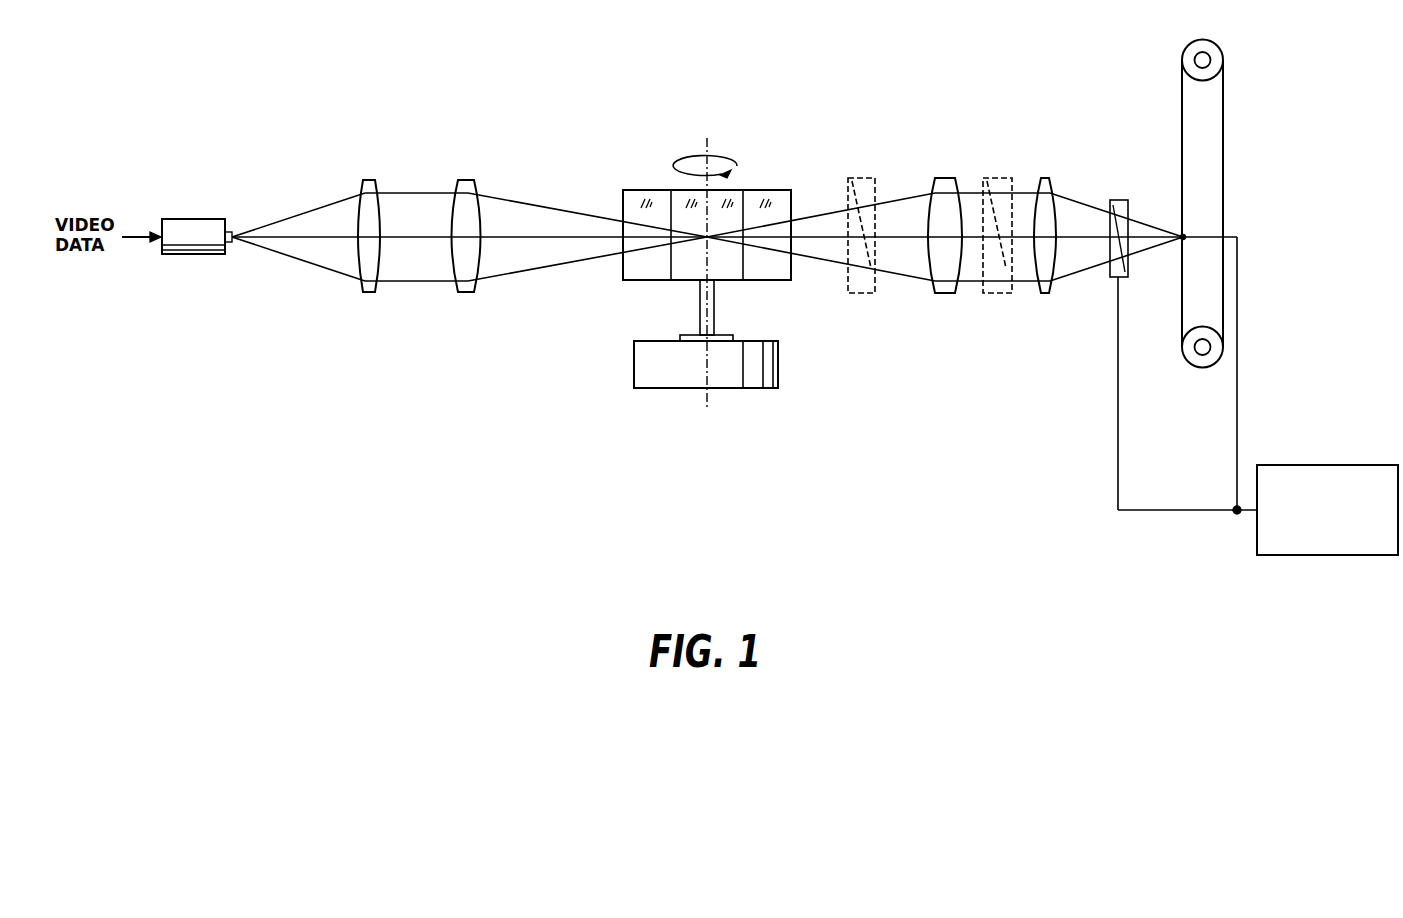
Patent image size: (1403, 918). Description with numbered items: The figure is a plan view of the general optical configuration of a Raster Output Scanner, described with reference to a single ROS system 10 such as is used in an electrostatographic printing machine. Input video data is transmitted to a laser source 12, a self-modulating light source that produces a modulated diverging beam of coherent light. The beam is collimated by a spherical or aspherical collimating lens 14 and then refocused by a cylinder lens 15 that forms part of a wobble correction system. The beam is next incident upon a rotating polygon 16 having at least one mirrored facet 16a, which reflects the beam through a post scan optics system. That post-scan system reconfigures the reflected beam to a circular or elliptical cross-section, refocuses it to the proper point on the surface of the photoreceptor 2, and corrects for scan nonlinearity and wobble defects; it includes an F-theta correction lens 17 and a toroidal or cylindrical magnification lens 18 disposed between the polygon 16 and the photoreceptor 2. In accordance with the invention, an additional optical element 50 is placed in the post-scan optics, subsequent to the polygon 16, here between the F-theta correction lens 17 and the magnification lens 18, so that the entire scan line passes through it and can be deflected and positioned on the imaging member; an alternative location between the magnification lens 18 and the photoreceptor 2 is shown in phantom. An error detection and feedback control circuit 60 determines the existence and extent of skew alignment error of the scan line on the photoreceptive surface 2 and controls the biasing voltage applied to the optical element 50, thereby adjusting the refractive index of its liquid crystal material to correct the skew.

The ROS system 10 is at (663, 133).
The laser source 12 is at (193, 254).
The collimating lens 14 is at (368, 292).
The cylinder lens 15 is at (463, 292).
The rotating polygon 16 is at (728, 200).
The mirrored facet 16a is at (650, 282).
The F-theta correction lens 17 is at (947, 293).
The magnification lens 18 is at (1045, 293).
The optical element 50 is at (1121, 205).
The photoreceptor 2 is at (1225, 190).
The error detection and feedback control circuit 60 is at (1327, 557).